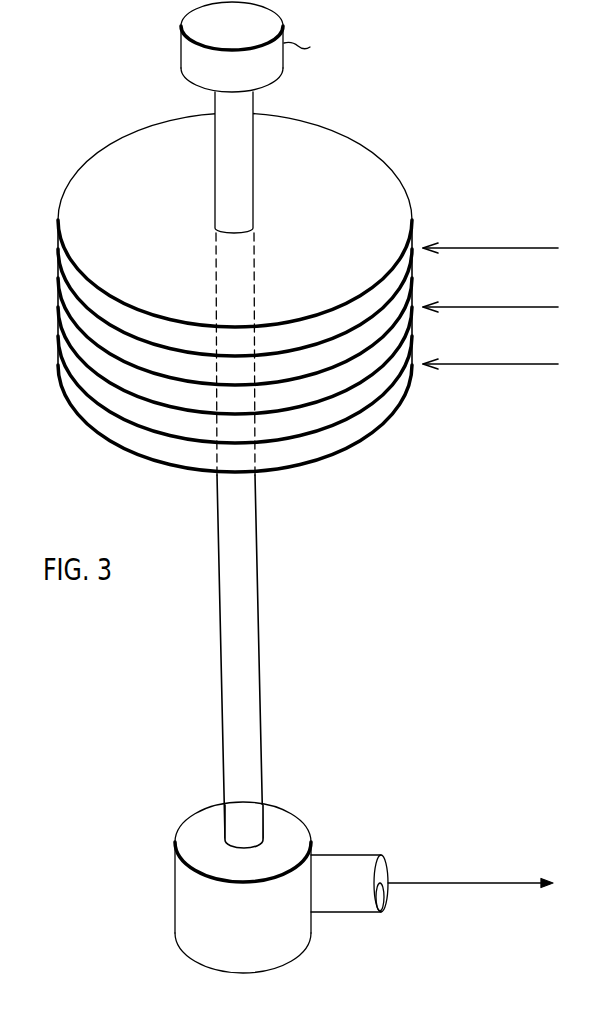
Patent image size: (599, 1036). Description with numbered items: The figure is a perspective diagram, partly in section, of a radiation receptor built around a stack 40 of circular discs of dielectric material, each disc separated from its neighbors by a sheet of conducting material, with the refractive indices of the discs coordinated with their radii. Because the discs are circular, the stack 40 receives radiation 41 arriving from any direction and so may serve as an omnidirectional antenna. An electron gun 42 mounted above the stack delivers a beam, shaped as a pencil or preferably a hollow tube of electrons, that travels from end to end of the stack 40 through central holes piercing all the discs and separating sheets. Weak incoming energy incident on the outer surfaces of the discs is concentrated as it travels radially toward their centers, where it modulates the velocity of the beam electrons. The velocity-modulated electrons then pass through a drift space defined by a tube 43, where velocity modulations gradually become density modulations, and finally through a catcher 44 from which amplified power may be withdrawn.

The stack 40 is at (332, 232).
The radiation 41 is at (482, 364).
The electron gun 42 is at (181, 51).
The tube 43 is at (258, 650).
The catcher 44 is at (175, 887).